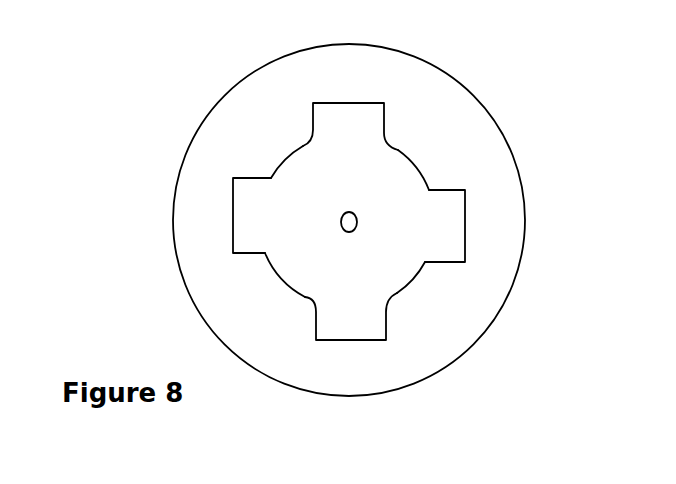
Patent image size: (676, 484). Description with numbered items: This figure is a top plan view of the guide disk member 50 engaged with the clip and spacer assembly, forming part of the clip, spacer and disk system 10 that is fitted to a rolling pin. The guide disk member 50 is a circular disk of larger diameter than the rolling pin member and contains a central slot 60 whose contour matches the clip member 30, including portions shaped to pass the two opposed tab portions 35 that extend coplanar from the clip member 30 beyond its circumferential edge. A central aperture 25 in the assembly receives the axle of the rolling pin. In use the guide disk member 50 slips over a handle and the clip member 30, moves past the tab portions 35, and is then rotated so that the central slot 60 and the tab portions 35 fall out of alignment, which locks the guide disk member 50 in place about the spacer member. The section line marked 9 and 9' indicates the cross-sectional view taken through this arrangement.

The clip, spacer and disk system 10 is at (552, 160).
The central aperture 25 is at (345, 228).
The clip member 30 is at (390, 178).
The tab portions 35 is at (358, 115).
The guide disk member 50 is at (457, 335).
The central slot 60 is at (245, 205).
The section line 9 is at (423, 23).
The section line 9' is at (424, 419).